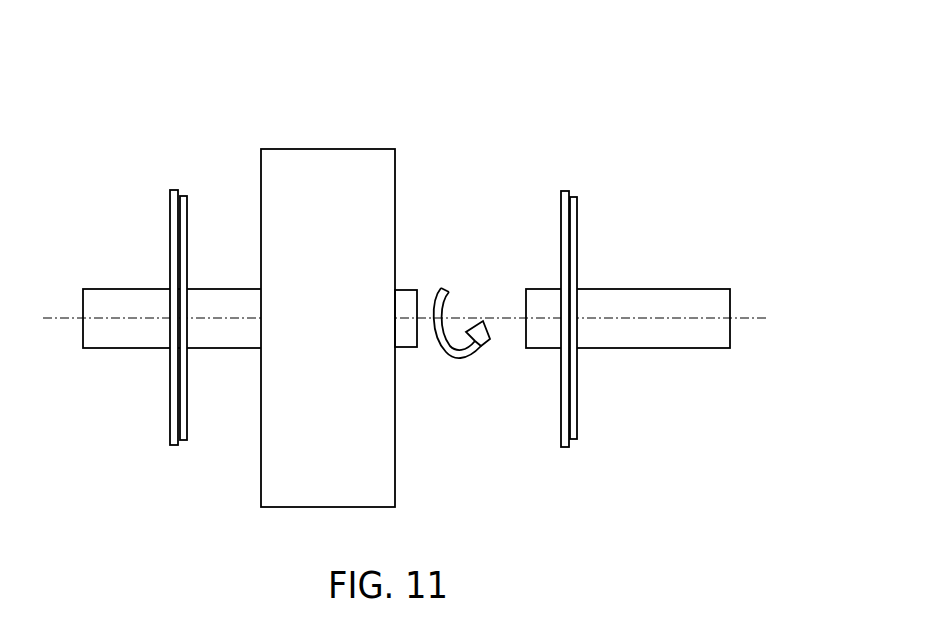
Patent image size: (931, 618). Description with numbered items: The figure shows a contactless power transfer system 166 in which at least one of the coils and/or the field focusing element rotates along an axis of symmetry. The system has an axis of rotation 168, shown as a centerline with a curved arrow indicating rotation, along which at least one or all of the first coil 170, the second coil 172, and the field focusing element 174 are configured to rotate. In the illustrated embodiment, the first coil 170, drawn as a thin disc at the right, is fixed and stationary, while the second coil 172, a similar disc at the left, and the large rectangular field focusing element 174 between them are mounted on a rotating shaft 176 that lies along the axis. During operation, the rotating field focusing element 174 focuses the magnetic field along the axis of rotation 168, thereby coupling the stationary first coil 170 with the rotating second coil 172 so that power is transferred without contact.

The contactless power transfer system 166 is at (660, 50).
The axis of rotation 168 is at (465, 317).
The first coil 170 is at (566, 190).
The second coil 172 is at (172, 189).
The field focusing element 174 is at (327, 149).
The rotating shaft 176 is at (103, 288).